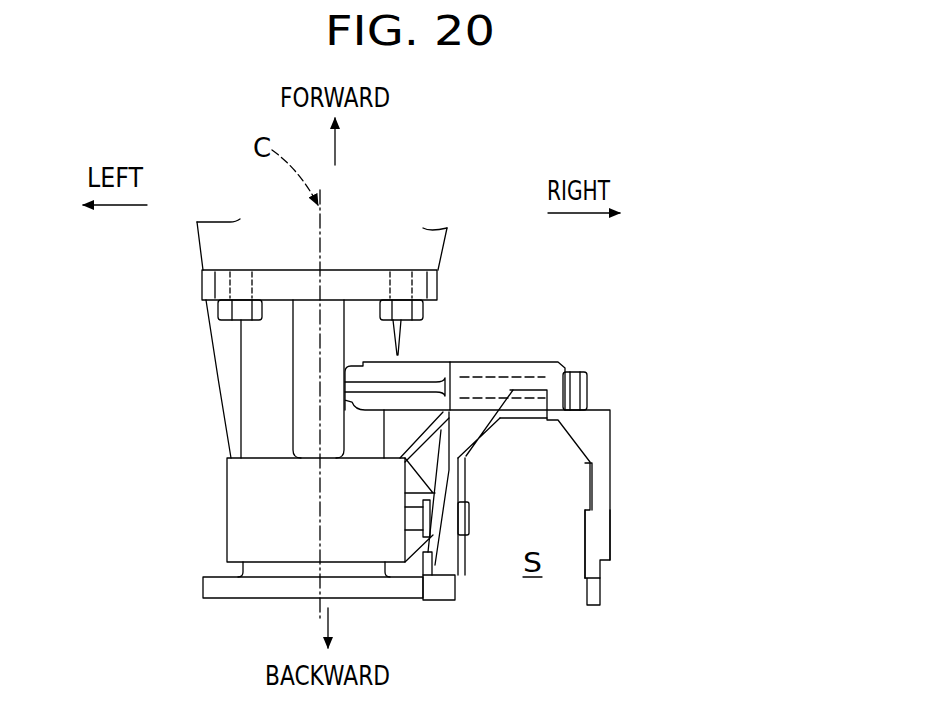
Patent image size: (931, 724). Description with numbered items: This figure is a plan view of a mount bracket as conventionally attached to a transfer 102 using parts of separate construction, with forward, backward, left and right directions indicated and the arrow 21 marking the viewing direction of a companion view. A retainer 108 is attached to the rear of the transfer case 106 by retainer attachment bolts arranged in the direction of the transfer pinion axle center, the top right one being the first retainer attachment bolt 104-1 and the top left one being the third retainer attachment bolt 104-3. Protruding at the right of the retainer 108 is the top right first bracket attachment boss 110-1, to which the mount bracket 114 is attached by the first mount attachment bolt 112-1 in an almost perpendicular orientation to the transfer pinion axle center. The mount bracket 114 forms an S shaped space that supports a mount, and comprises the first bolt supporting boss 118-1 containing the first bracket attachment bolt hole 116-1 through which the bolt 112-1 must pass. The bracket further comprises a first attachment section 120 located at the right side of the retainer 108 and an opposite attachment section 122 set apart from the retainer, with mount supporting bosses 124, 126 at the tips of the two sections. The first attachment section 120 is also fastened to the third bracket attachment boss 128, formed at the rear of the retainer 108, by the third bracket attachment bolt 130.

The transfer 102 is at (440, 185).
The transfer case 106 is at (215, 222).
The retainer attachment bolt NO. 1 104-1 is at (420, 312).
The retainer attachment bolt NO. 3 104-3 is at (222, 308).
The retainer 108 is at (228, 378).
The NO. 1 bracket attachment boss 110-1 is at (420, 368).
The NO. 1 bracket attachment bolt hole 116-1 is at (520, 380).
The NO. 1 bolt supporting boss 118-1 is at (558, 365).
The mount attachment bolt NO. 1 112-1 is at (586, 390).
The viewing direction 21 is at (633, 407).
The mount bracket 114 is at (613, 497).
The opposite attachment section 122 is at (600, 542).
The mount supporting boss 126 is at (596, 592).
The NO. 3 bracket attachment bolt 130 is at (470, 518).
The mount supporting boss 124 is at (440, 596).
The NO. 3 bracket attachment boss 128 is at (427, 548).
The first attachment section 120 is at (450, 550).